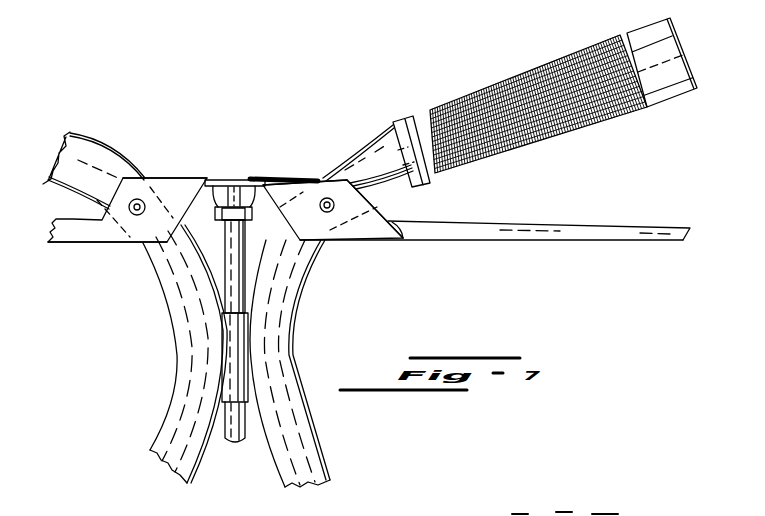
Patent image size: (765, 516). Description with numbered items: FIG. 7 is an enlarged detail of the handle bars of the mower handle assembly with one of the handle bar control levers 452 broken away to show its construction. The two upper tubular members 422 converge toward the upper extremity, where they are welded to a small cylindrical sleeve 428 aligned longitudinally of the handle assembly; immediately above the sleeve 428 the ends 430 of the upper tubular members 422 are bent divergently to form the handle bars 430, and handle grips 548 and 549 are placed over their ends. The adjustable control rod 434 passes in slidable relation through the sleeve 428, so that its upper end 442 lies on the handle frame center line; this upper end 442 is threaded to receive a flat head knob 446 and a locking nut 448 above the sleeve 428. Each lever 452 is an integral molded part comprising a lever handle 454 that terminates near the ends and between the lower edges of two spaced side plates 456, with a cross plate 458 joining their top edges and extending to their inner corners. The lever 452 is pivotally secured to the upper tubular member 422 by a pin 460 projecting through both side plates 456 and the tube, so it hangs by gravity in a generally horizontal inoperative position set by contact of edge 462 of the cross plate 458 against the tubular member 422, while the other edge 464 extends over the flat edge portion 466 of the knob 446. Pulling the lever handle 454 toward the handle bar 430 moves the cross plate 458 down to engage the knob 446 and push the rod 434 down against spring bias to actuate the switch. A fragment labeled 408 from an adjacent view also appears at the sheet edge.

The adjacent figure reference (partial) 408 is at (565, 506).
The upper tubular member 422 is at (172, 410).
The cylindrical sleeve 428 is at (243, 383).
The handle bar 430 is at (97, 155).
The adjustable rod 434 is at (230, 437).
The upper end of rod 442 is at (237, 280).
The flat head knob 446 is at (235, 192).
The locking nut 448 is at (240, 210).
The control lever 452 is at (85, 243).
The lever handle 454 is at (627, 236).
The side plate 456 is at (162, 190).
The cross plate 458 is at (193, 178).
The pin 460 is at (142, 214).
The edge of cross plate 462 is at (317, 178).
The other edge of cross plate 464 is at (257, 177).
The flat edge portion of knob 466 is at (223, 180).
The handle grip 548 is at (520, 80).
The handle grip 549 is at (63, 132).